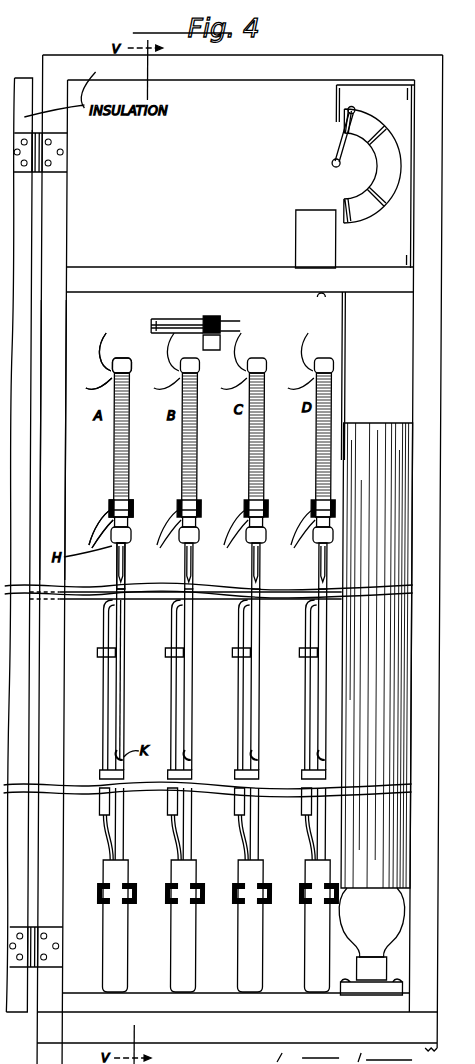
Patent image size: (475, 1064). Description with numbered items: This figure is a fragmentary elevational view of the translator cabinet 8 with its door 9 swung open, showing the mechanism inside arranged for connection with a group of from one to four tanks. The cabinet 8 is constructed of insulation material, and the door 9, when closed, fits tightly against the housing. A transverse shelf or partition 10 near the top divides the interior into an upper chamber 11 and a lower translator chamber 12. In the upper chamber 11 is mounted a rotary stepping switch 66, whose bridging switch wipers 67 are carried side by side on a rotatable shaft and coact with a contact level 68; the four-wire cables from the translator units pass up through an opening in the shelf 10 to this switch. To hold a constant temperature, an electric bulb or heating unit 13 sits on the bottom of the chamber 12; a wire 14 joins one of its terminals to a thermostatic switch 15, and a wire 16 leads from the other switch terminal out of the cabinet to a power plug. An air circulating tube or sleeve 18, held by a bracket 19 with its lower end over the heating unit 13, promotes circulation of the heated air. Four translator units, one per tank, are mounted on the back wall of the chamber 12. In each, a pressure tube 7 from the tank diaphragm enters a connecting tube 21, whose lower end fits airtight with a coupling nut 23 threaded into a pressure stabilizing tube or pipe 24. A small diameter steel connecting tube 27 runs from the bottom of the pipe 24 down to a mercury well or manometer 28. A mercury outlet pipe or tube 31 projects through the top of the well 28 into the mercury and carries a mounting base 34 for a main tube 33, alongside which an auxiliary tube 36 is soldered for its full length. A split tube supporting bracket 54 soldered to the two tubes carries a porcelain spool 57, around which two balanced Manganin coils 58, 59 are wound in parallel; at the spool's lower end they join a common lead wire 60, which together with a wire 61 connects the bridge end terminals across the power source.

The pressure tube 7 is at (105, 600).
The translator cabinet 8 is at (322, 72).
The door 9 is at (25, 245).
The transverse shelf or partition 10 is at (108, 279).
The upper chamber 11 is at (102, 192).
The lower translator chamber 12 is at (85, 351).
The electric bulb or heating unit 13 is at (372, 900).
The wire 14 is at (242, 333).
The thermostatic switch 15 is at (205, 316).
The wire 16 is at (240, 322).
The air circulating tube or sleeve 18 is at (385, 679).
The bracket 19 is at (337, 337).
The connecting tube 21 is at (106, 631).
The coupling nut 23 is at (100, 657).
The pressure stabilizing tube or pipe 24 is at (106, 715).
The small diameter steel connecting tube 27 is at (108, 839).
The mercury well or manometer 28 is at (115, 933).
The mercury outlet pipe or tube 31 is at (121, 842).
The main tube 33 is at (124, 718).
The mounting base 34 is at (110, 770).
The auxiliary tube 36 is at (122, 738).
The split tube supporting bracket 54 is at (120, 566).
The porcelain spool 57 is at (128, 360).
The balanced coil 58 is at (116, 525).
The balanced coil 59 is at (110, 380).
The common lead wire 60 is at (114, 508).
The wire 61 is at (123, 764).
The rotary stepping switch 66 is at (337, 105).
The bridging switch wipers 67 is at (340, 131).
The contact level 68 is at (362, 212).